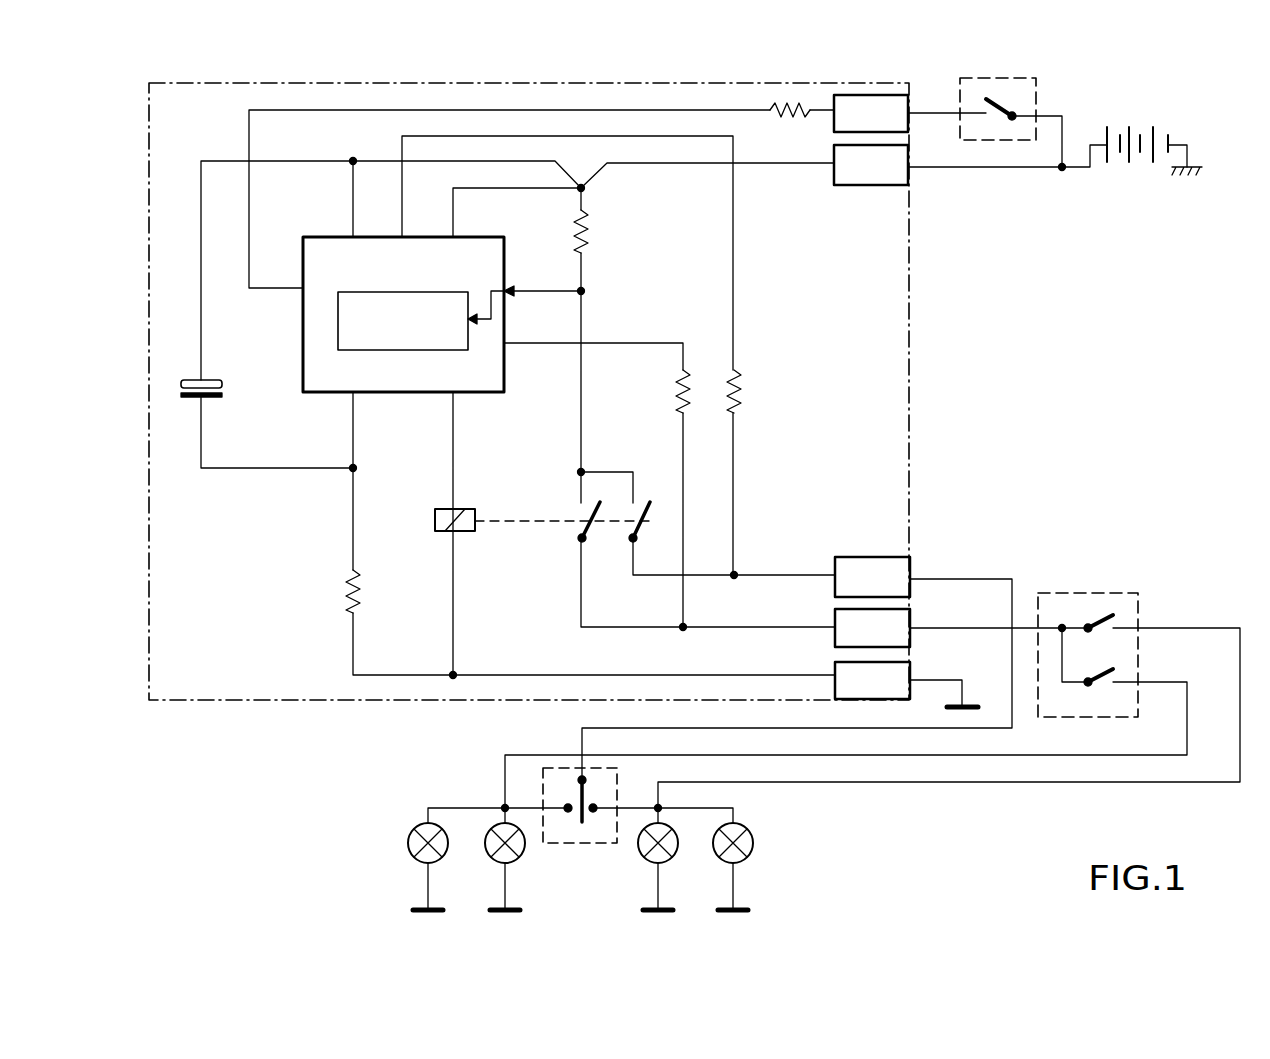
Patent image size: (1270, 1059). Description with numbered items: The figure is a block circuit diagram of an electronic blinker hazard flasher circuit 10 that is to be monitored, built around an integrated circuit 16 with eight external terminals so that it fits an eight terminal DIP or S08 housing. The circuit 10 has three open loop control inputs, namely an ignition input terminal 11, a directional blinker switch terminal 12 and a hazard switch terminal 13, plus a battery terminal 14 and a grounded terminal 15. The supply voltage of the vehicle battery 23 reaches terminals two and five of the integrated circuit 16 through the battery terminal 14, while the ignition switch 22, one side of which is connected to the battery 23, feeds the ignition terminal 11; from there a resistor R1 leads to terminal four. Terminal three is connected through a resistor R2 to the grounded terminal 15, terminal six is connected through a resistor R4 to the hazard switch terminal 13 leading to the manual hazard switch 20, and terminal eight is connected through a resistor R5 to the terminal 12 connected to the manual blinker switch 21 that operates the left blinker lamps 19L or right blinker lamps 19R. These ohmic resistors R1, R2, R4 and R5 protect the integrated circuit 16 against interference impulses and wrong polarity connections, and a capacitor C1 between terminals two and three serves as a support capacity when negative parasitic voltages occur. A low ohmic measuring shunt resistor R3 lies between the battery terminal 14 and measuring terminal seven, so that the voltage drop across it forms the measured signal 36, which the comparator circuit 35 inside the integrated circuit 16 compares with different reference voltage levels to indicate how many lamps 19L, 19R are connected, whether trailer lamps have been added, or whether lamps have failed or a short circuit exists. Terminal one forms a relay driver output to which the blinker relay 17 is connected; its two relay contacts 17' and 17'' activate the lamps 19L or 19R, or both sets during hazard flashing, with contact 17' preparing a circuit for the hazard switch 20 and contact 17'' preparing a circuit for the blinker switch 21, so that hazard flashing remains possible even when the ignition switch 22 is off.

The blinker hazard flasher circuit 10 is at (914, 378).
The ignition input terminal 11 is at (915, 125).
The directional blinker switch terminal 12 is at (853, 562).
The hazard switch terminal 13 is at (800, 545).
The battery terminal 14 is at (840, 123).
The grounded terminal 15 is at (757, 545).
The integrated circuit 16 is at (428, 337).
The blinker relay 17 is at (429, 538).
The relay contact 17' is at (561, 546).
The relay contact 17'' is at (620, 551).
The left blinker lamps 19L is at (488, 863).
The right blinker lamps 19R is at (678, 862).
The hazard switch 20 is at (1120, 593).
The blinker switch 21 is at (578, 845).
The ignition switch 22 is at (1030, 88).
The battery 23 is at (1148, 170).
The comparator circuit 35 is at (375, 350).
The measured signal 36 is at (585, 291).
The resistor R1 is at (778, 123).
The resistor R2 is at (345, 613).
The measuring shunt resistor R3 is at (590, 244).
The resistor R4 is at (676, 404).
The resistor R5 is at (742, 402).
The capacitor C1 is at (214, 397).